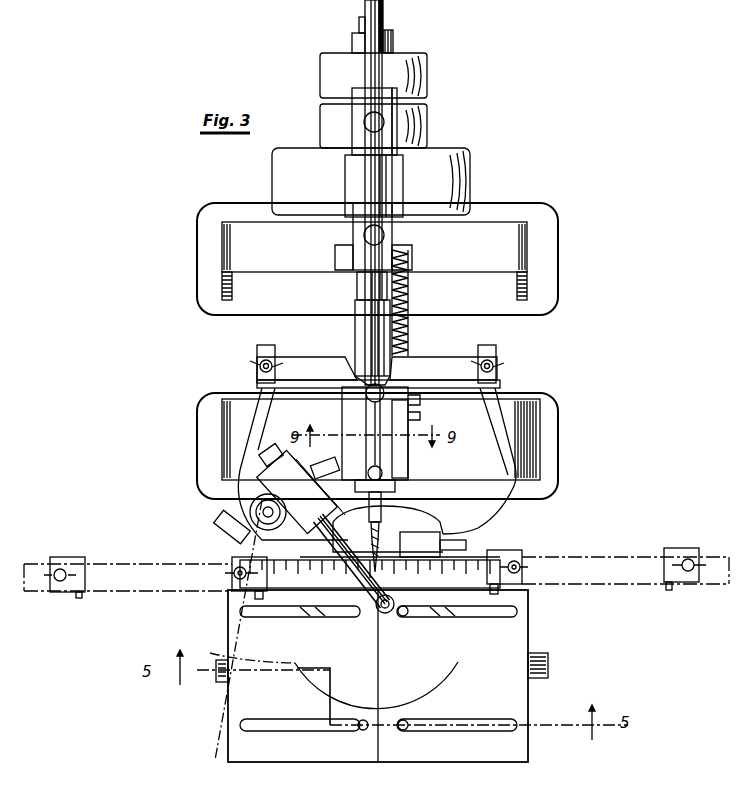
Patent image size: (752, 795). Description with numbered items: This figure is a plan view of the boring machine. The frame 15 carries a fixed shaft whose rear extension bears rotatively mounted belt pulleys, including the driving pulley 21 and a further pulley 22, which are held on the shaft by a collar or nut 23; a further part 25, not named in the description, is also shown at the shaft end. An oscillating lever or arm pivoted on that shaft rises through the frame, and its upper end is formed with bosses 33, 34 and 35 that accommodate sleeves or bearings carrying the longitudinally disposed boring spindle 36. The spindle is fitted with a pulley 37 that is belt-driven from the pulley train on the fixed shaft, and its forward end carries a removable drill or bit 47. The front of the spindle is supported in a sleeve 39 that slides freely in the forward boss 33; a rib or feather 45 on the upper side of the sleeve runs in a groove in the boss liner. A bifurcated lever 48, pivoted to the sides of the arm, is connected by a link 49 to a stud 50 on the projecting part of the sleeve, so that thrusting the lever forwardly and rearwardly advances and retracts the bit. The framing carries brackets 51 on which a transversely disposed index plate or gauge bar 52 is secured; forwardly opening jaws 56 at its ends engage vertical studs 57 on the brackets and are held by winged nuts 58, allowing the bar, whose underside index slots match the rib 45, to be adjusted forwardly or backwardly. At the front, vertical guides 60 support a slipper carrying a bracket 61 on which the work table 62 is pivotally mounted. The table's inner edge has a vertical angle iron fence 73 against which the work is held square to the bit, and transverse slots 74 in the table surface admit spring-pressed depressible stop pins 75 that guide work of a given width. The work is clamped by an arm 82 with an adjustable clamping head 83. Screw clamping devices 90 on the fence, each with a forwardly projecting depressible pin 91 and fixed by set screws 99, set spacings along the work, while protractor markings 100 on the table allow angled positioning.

The frame 15 is at (377, 259).
The driving pulley 21 is at (428, 123).
The belt pulley 22 is at (428, 75).
The collar or nut 23 is at (366, 30).
The spindle shaft 25 is at (386, 24).
The boss 33 is at (408, 458).
The boss 34 is at (353, 232).
The boss 35 is at (360, 138).
The boring spindle 36 is at (364, 50).
The pulley 37 is at (345, 170).
The sleeve 39 is at (356, 345).
The rib or feather 45 is at (364, 328).
The drill or bit 47 is at (370, 528).
The bifurcated lever 48 is at (342, 402).
The link 49 is at (370, 452).
The stud 50 is at (368, 478).
The brackets 51 is at (377, 446).
The index plate or gauge bar 52 is at (378, 372).
The jaws 56 is at (255, 388).
The vertical studs 57 is at (258, 356).
The winged nuts 58 is at (268, 358).
The vertical guides 60 is at (440, 540).
The bracket 61 is at (416, 546).
The table 62 is at (532, 640).
The angle iron fence 73 is at (118, 590).
The transverse slots 74 is at (265, 719).
The stop pins 75 is at (408, 616).
The arm 82 is at (280, 496).
The adjustable clamping head 83 is at (378, 614).
The screw clamping devices 90 is at (70, 557).
The depressible pin 91 is at (254, 595).
The set screws 99 is at (228, 574).
The protractor markings 100 is at (366, 700).